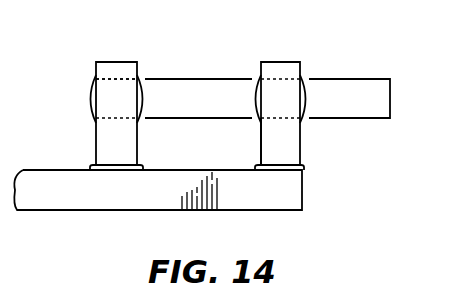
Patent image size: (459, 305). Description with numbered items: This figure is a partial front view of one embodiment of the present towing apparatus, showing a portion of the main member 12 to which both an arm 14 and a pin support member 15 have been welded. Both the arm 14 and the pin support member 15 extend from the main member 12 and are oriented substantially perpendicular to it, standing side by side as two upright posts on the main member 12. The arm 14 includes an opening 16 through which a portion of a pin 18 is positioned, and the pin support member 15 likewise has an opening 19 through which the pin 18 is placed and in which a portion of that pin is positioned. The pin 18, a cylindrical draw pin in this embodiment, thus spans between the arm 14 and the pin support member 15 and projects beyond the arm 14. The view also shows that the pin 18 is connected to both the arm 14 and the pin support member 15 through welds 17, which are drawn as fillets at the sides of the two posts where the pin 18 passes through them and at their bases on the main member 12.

The main member 12 is at (122, 200).
The arm 14 is at (272, 136).
The pin support member 15 is at (107, 136).
The opening 16 is at (270, 79).
The weld 17 is at (93, 76).
The pin 18 is at (377, 100).
The opening 19 is at (127, 79).